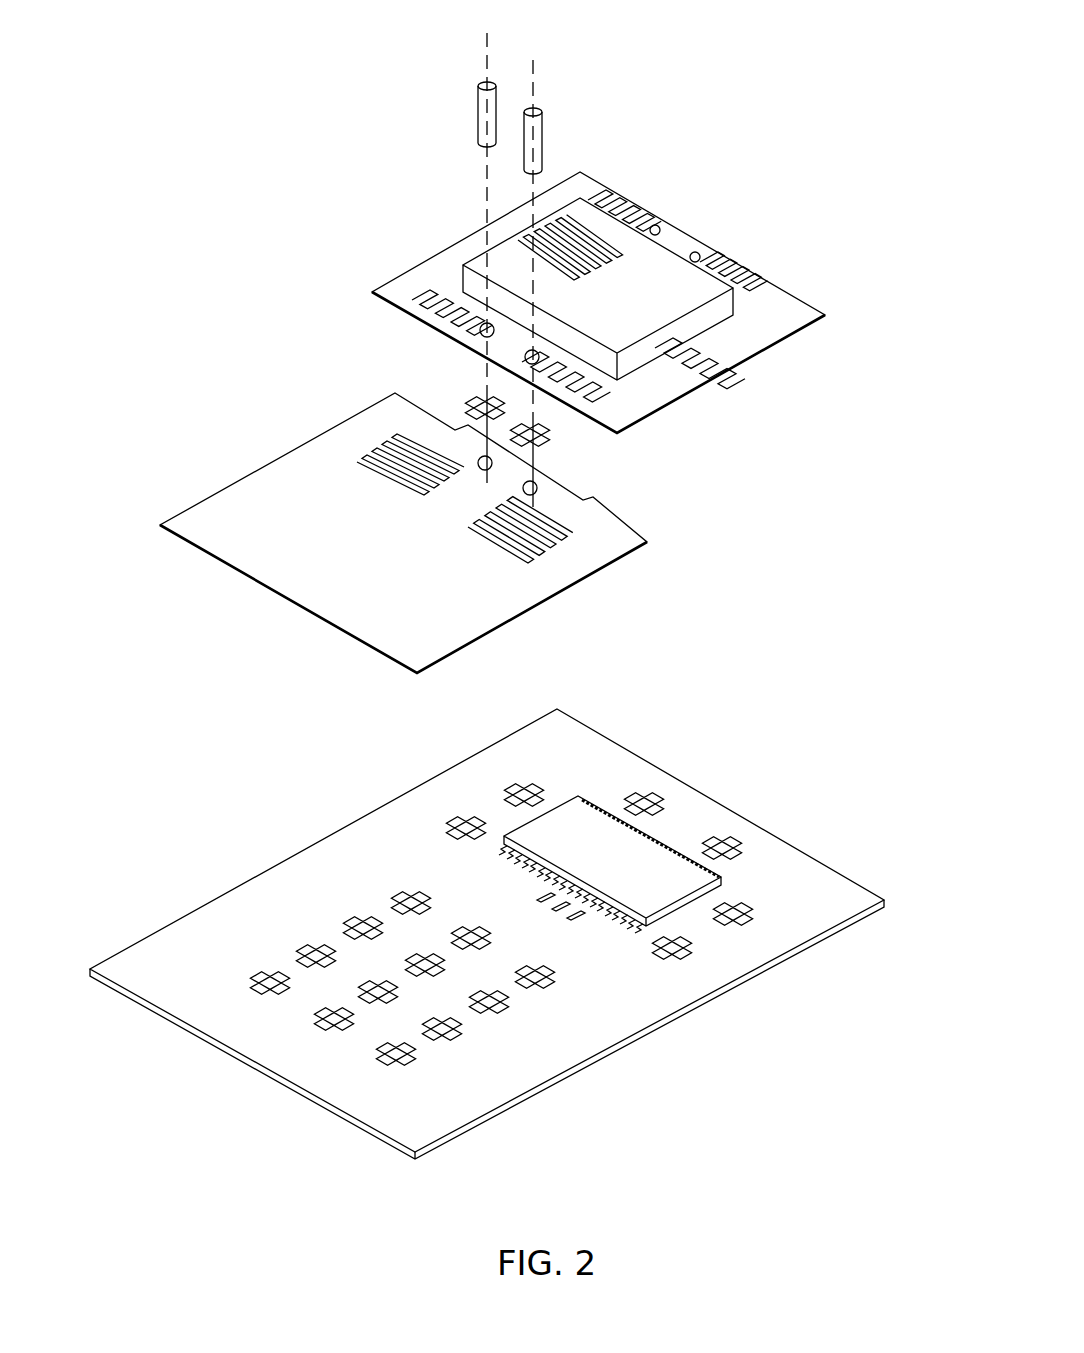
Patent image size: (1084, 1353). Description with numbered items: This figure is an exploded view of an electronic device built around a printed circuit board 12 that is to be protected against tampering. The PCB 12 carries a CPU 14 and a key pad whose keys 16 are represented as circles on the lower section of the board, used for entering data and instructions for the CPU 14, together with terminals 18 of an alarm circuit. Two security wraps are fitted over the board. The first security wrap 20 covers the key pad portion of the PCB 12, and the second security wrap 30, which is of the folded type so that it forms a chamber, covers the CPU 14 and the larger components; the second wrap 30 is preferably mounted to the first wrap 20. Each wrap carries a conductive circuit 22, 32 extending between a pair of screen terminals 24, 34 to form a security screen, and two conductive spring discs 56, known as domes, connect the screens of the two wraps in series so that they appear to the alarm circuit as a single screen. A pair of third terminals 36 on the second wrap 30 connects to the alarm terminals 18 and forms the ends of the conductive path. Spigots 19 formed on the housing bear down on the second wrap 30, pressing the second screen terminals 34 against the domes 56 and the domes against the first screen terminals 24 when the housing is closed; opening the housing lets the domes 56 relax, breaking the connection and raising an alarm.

The printed circuit board 12 is at (792, 875).
The CPU 14 is at (568, 829).
The keys 16 is at (418, 1052).
The alarm terminals 18 is at (717, 840).
The spigots 19 is at (523, 153).
The first security wrap 20 is at (607, 538).
The conductive circuit 22 is at (545, 550).
The first screen terminals 24 is at (537, 487).
The second security wrap 30 is at (783, 312).
The conductive circuit 32 is at (598, 395).
The second screen terminals 34 is at (526, 357).
The third terminals 36 is at (697, 253).
The conductive spring discs 56 is at (472, 403).